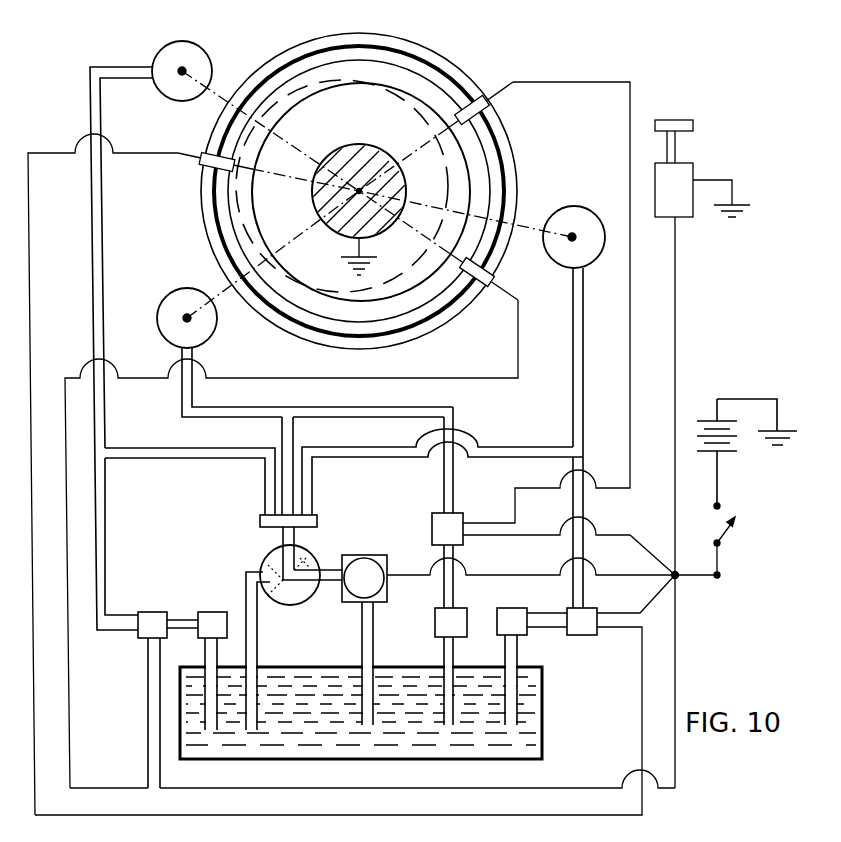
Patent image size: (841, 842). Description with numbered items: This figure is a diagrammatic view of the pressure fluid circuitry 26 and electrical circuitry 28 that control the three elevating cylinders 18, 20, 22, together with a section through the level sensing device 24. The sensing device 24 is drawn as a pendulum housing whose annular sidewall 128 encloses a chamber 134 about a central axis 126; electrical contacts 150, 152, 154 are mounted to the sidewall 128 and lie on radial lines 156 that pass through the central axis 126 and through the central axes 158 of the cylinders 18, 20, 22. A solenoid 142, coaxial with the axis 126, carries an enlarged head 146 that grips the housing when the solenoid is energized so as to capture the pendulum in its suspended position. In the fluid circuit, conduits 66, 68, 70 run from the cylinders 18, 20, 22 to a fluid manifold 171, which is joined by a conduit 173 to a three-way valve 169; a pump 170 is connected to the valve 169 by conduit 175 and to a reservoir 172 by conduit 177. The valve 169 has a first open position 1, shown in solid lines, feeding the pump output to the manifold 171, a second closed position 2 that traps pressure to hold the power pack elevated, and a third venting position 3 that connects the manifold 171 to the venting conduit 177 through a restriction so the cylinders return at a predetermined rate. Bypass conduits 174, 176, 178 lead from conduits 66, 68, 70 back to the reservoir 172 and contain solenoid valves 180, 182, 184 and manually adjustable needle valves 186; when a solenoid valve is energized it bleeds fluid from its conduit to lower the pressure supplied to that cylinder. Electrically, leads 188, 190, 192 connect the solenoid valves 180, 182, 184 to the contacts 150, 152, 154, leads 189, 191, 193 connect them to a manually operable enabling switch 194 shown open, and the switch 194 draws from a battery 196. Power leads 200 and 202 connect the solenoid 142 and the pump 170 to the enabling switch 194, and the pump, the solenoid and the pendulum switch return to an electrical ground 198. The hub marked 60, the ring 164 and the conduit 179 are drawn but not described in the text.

The first open position 1 is at (296, 552).
The second closed position 2 is at (312, 560).
The third venting position 3 is at (275, 592).
The cylinder 18 is at (150, 45).
The cylinder 20 is at (148, 318).
The cylinder 22 is at (599, 210).
The level sensing device 24 is at (364, 183).
The pressure fluid circuitry 26 is at (86, 283).
The electrical circuitry 28 is at (40, 360).
The hub 60 is at (315, 199).
The conduit 66 is at (135, 447).
The conduit 68 is at (262, 432).
The conduit 70 is at (573, 418).
The central axis 126 is at (359, 187).
The annular sidewall 128 is at (513, 142).
The chamber 134 is at (222, 237).
The electrical solenoid 142 is at (693, 170).
The enlarged head 146 is at (693, 124).
The electrical contact 150 is at (489, 290).
The electrical contact 152 is at (471, 121).
The electrical contact 154 is at (206, 152).
The radial lines 156 is at (335, 175).
The central axes of cylinders 158 is at (184, 69).
The inner ring 164 is at (404, 90).
The three-way valve 169 is at (318, 539).
The pump 170 is at (384, 556).
The fluid manifold 171 is at (260, 520).
The pressure fluid reservoir 172 is at (562, 715).
The conduit 173 is at (278, 543).
The bypass conduit 174 is at (123, 632).
The conduit 175 is at (330, 585).
The bypass conduit 176 is at (402, 418).
The conduit 177 is at (373, 650).
The bypass conduit 178 is at (587, 505).
The return conduit 179 is at (257, 650).
The solenoid valve 180 is at (165, 598).
The solenoid valve 182 is at (458, 513).
The solenoid valve 184 is at (583, 635).
The needle valves 186 is at (225, 598).
The electrical lead 188 is at (71, 763).
The electrical lead 189 is at (606, 787).
The electrical lead 190 is at (558, 82).
The electrical lead 191 is at (550, 520).
The electrical lead 192 is at (642, 675).
The electrical lead 193 is at (624, 612).
The enabling switch 194 is at (741, 540).
The battery 196 is at (712, 412).
The electrical ground 198 is at (344, 258).
The power lead 200 is at (676, 318).
The power lead 202 is at (620, 575).